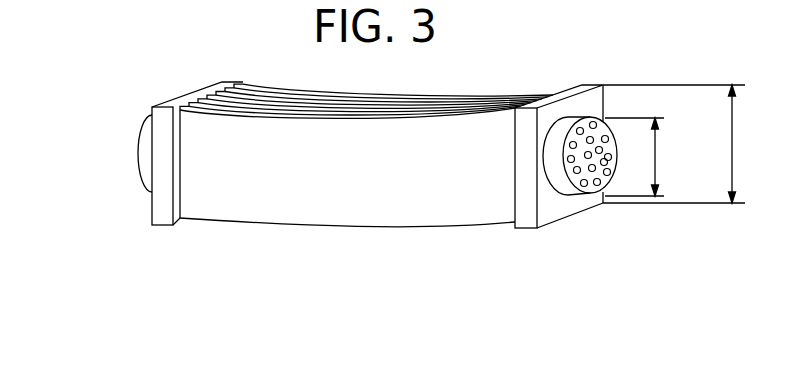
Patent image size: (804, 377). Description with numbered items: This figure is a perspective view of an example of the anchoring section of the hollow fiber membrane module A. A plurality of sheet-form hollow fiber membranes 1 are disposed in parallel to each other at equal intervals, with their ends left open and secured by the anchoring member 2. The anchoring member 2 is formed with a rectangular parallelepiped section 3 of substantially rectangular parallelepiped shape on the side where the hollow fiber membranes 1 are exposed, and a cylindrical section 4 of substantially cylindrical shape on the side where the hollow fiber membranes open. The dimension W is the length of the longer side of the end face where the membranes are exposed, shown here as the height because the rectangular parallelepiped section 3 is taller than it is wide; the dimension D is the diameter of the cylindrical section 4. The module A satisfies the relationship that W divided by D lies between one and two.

The sheet-form hollow fiber membrane 1 is at (275, 207).
The anchoring member 2 is at (551, 223).
The rectangular parallelepiped section 3 is at (520, 202).
The cylindrical section 4 is at (543, 188).
The hollow fiber membrane module A is at (103, 107).
The diameter of the cylindrical section D is at (643, 157).
The length of the longer side of the end face W is at (684, 144).